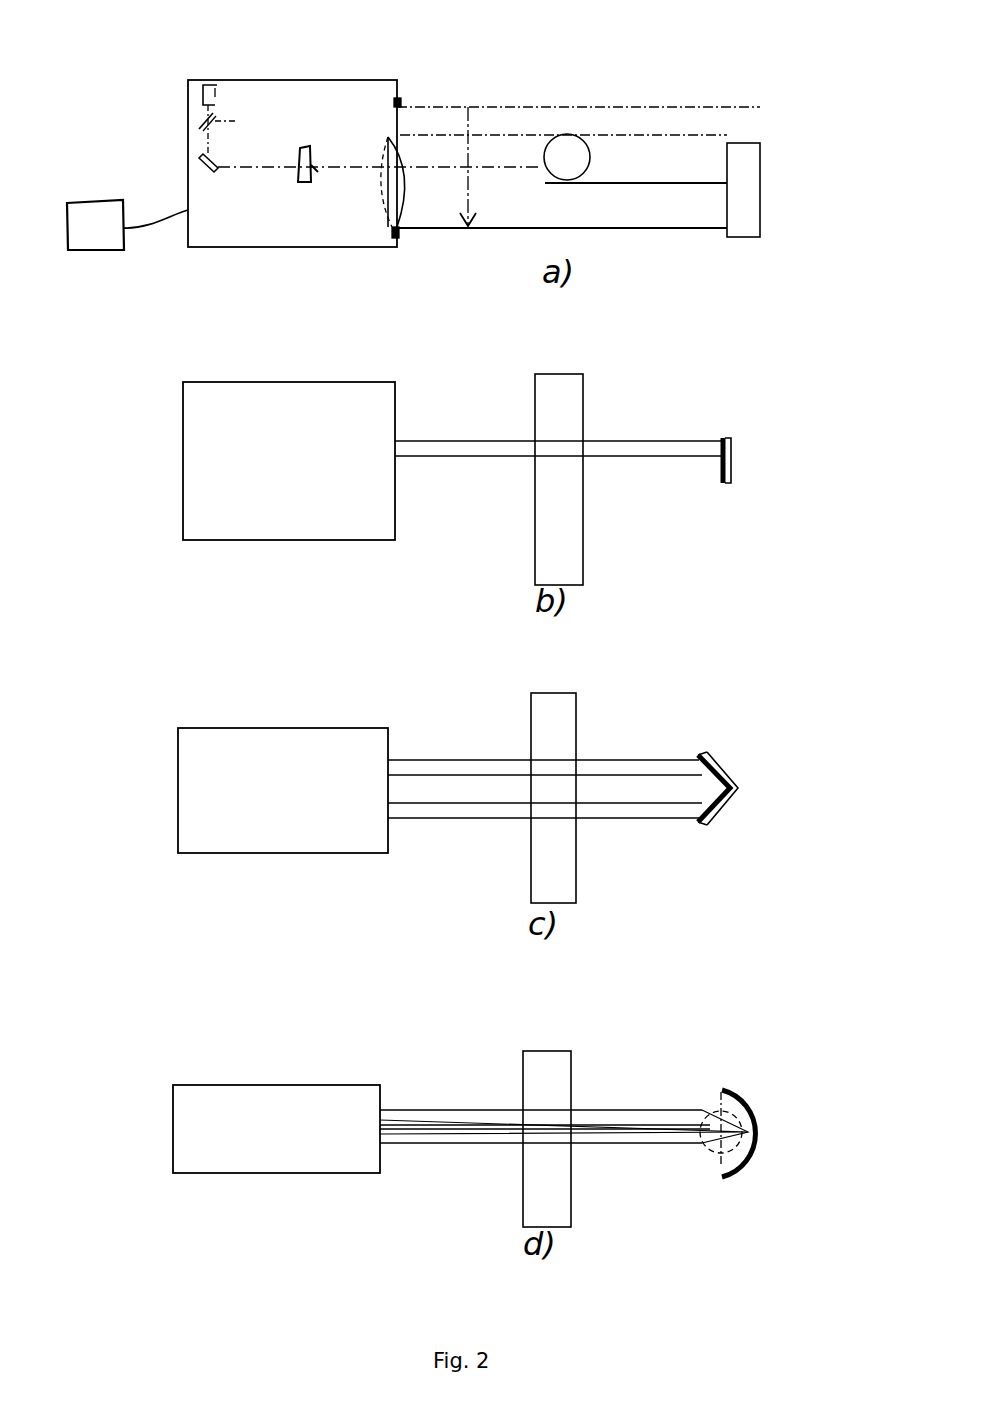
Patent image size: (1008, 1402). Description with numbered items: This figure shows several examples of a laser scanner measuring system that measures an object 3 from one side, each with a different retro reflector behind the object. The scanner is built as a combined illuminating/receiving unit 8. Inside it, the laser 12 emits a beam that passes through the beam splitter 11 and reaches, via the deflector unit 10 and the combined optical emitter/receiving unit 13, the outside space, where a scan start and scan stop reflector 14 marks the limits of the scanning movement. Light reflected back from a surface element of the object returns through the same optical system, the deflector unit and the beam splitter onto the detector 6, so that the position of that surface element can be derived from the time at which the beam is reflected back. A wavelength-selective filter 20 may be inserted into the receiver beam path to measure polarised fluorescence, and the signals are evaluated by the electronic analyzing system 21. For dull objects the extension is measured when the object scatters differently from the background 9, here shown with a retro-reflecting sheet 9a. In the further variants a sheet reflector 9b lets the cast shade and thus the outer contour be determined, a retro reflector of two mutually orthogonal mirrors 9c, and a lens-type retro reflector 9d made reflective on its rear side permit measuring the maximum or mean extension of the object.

The sample / measuring volume 3 is at (565, 132).
The detector 6 is at (276, 111).
The combined illuminating/receiving unit 8 is at (263, 70).
The background 9 is at (781, 143).
The retro-reflecting sheet 9a is at (733, 105).
The sheet reflector 9b is at (731, 432).
The retro reflector of two mutually orthogonal mirrors 9c is at (725, 748).
The lens-type retro reflector 9d is at (745, 1098).
The deflector unit 10 is at (214, 178).
The beam splitter 11 is at (199, 122).
The laser 12 is at (197, 70).
The combined optical emitter/receiving unit 13 is at (425, 68).
The scan start and scan stop reflector 14 is at (395, 93).
The filter 20 is at (318, 180).
The electronic analyzing system 21 is at (92, 252).